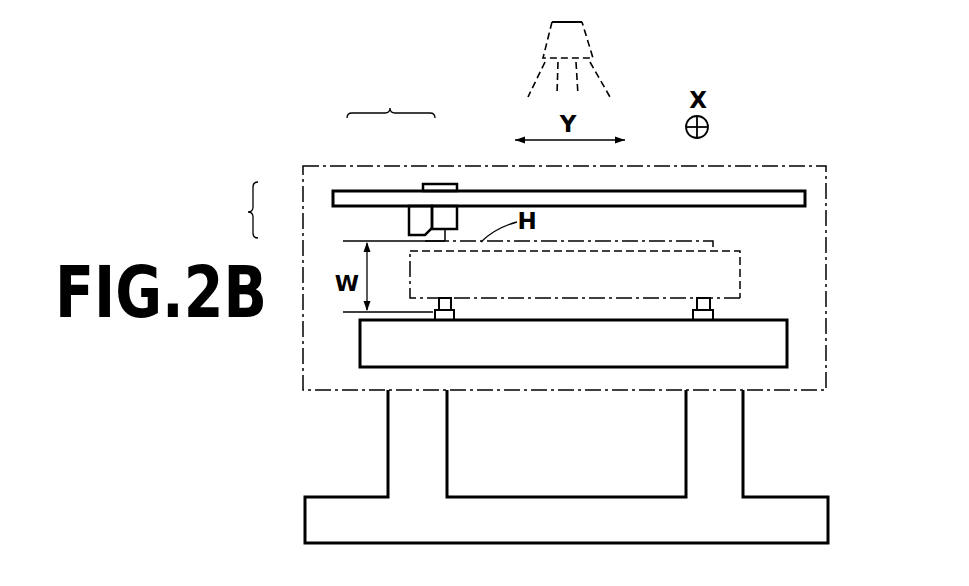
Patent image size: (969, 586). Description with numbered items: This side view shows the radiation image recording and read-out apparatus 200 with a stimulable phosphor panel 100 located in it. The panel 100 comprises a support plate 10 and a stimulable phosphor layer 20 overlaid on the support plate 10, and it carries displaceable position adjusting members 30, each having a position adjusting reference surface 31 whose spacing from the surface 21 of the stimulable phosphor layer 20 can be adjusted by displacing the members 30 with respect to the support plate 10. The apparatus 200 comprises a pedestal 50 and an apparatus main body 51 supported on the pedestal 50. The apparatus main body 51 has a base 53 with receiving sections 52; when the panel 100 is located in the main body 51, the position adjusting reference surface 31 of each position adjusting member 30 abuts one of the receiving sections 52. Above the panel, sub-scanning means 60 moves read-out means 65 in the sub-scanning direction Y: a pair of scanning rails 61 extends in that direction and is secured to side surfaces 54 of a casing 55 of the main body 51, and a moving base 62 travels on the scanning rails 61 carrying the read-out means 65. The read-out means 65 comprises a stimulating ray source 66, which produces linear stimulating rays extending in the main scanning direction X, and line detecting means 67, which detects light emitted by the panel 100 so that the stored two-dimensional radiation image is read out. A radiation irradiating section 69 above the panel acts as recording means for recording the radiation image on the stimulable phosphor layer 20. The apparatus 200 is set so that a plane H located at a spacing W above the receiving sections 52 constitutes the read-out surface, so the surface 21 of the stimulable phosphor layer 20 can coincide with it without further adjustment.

The support plate 10 is at (742, 260).
The stimulable phosphor layer 20 is at (683, 242).
The surface of the stimulable phosphor layer 21 is at (547, 242).
The position adjusting member 30 is at (455, 312).
The position adjusting reference surface 31 is at (447, 322).
The pedestal 50 is at (818, 528).
The apparatus main body 51 is at (843, 392).
The receiving section 52 is at (433, 318).
The base 53 is at (772, 332).
The side surface of the casing 54 is at (717, 0).
The casing 55 is at (833, 231).
The sub-scanning means 60 is at (391, 100).
The scanning rail 61 is at (390, 202).
The moving base 62 is at (437, 188).
The read-out means 65 is at (234, 210).
The stimulating ray source 66 is at (420, 228).
The line detecting means 67 is at (438, 215).
The radiation irradiating section 69 is at (583, 43).
The stimulable phosphor panel 100 is at (748, 289).
The radiation image recording and read-out apparatus 200 is at (766, 103).